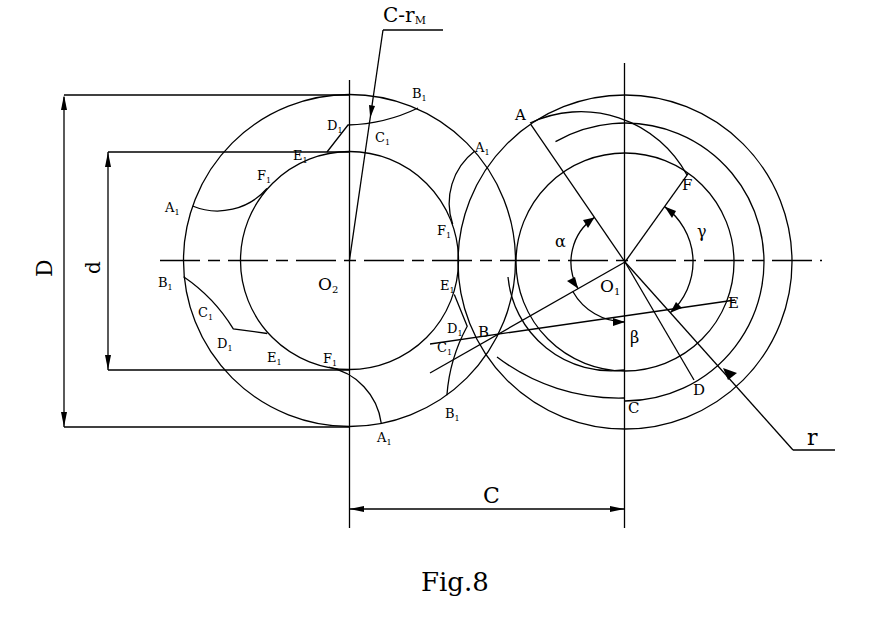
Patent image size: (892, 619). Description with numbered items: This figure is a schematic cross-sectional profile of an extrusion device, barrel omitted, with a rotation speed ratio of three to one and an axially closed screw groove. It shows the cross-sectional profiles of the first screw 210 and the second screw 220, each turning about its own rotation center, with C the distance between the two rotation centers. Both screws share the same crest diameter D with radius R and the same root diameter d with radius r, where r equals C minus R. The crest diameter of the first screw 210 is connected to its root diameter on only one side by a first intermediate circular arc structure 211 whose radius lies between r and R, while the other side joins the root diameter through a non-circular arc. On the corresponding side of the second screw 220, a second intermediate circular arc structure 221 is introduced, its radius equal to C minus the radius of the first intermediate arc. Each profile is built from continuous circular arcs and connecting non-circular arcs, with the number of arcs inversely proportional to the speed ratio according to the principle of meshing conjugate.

The first screw 210 is at (643, 112).
The first intermediate circular arc structure 211 is at (664, 396).
The second screw 220 is at (313, 408).
The second intermediate circular arc structure 221 is at (360, 123).